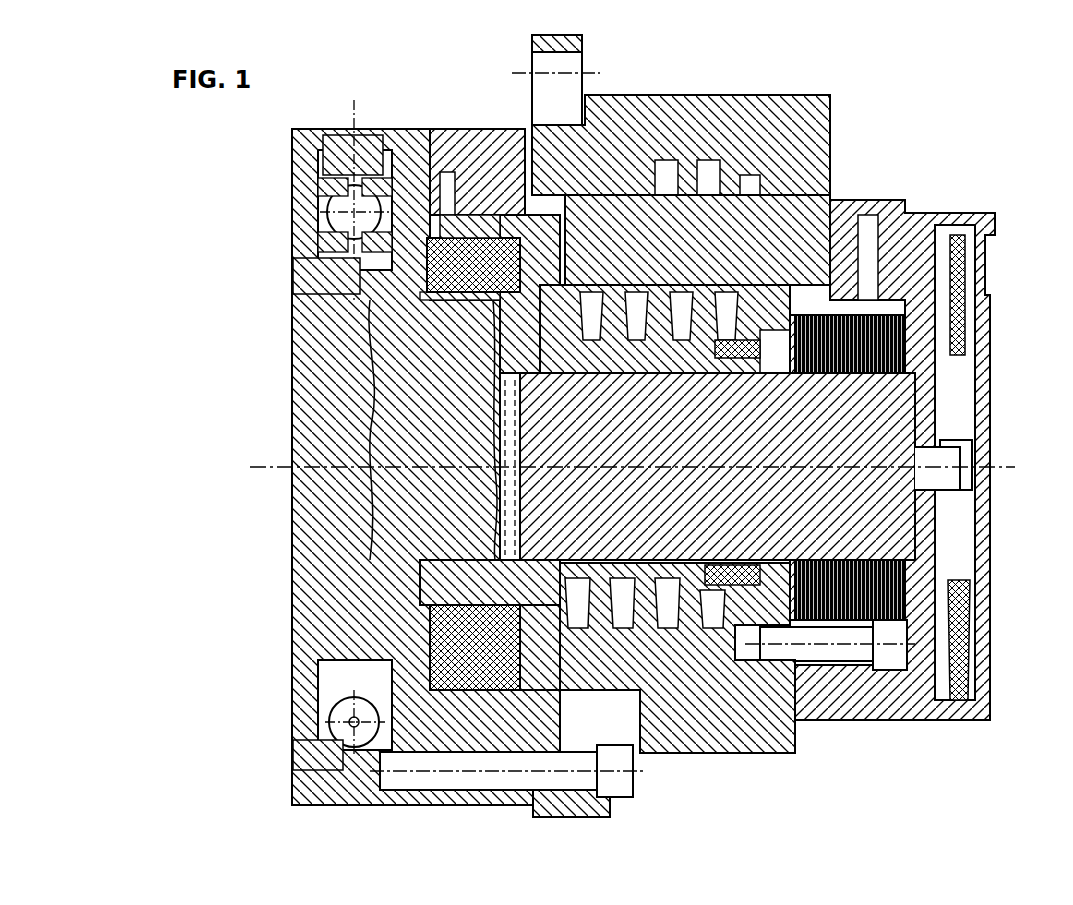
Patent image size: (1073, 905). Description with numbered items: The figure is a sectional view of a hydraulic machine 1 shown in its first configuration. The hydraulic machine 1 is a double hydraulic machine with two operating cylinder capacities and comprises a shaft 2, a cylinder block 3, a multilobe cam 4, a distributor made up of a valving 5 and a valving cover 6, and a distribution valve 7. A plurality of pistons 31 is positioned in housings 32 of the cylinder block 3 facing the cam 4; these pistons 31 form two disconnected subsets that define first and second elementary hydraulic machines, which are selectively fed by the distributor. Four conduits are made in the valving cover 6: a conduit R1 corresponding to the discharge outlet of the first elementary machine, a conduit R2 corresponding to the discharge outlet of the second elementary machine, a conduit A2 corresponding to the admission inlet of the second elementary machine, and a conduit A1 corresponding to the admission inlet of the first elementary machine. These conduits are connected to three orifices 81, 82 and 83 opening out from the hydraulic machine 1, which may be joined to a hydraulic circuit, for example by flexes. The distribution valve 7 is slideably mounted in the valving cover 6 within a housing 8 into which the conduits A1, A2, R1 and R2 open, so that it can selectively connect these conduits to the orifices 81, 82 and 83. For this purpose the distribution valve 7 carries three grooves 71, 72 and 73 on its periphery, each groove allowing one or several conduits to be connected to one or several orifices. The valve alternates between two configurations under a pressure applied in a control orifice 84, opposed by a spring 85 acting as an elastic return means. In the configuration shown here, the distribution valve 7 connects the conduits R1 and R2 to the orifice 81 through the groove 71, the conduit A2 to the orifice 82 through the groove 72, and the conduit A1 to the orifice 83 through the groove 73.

The hydraulic machine 1 is at (944, 121).
The shaft 2 is at (870, 410).
The cylinder block 3 is at (292, 348).
The pistons 31 is at (473, 215).
The housings 32 is at (492, 262).
The multilobe cam 4 is at (468, 130).
The valving 5 is at (712, 670).
The valving cover 6 is at (620, 710).
The distribution valve 7 is at (850, 185).
The groove 71 is at (590, 200).
The groove 72 is at (640, 190).
The groove 73 is at (795, 198).
The housing 8 is at (555, 245).
The orifice 81 is at (616, 205).
The orifice 82 is at (665, 190).
The orifice 83 is at (742, 192).
The control orifice 84 is at (828, 250).
The spring 85 is at (885, 190).
The conduit A1 is at (660, 345).
The conduit A2 is at (600, 345).
The conduit R1 is at (615, 205).
The conduit R2 is at (632, 215).